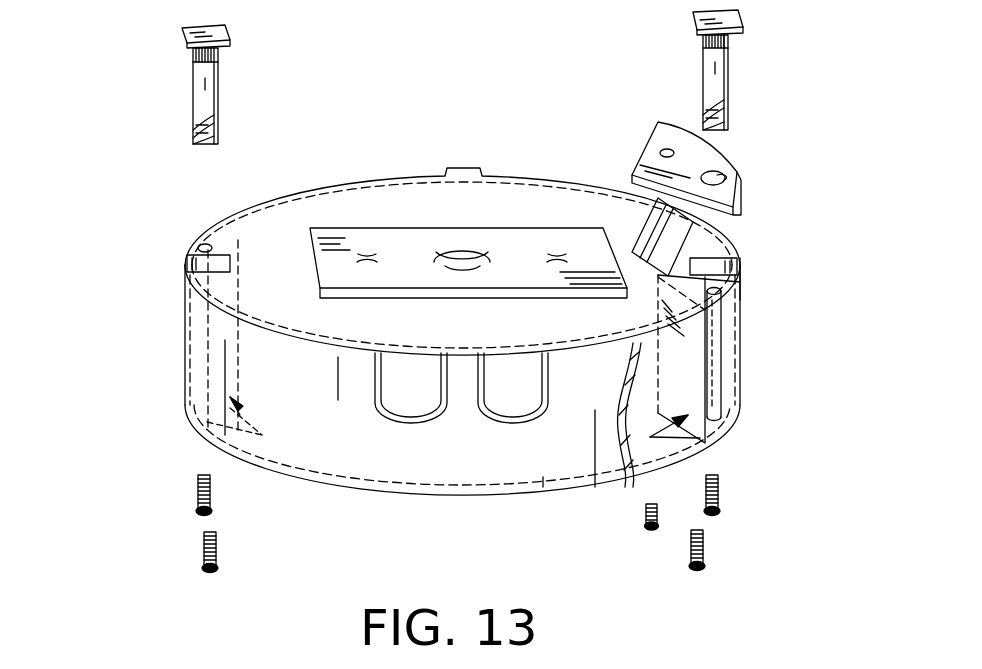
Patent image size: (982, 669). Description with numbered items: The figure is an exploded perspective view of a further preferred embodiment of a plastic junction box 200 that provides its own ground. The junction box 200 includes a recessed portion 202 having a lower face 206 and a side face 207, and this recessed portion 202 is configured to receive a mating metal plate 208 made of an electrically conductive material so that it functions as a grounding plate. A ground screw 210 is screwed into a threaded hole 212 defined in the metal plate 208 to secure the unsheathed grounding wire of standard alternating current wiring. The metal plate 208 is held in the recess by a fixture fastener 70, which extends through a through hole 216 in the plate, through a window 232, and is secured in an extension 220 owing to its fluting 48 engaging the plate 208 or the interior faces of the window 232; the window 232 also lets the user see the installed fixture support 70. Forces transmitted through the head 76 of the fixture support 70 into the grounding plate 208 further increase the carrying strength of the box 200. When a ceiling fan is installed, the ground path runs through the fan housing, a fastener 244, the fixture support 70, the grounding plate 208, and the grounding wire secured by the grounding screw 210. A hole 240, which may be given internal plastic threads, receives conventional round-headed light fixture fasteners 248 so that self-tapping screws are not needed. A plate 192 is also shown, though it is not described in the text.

The fluting 48 is at (703, 43).
The fixture fastener 70 is at (490, 72).
The head 76 is at (212, 32).
The mounting plate 192 is at (400, 242).
The junction box 200 is at (436, 331).
The recessed portion 202 is at (748, 261).
The lower face 206 is at (722, 250).
The side face 207 is at (650, 214).
The metal plate 208 is at (672, 163).
The ground screw 210 is at (645, 518).
The threaded hole 212 is at (658, 153).
The through hole 216 is at (745, 178).
The extension 220 is at (207, 422).
The window 232 is at (176, 262).
The hole 240 is at (205, 245).
The fastener 244 is at (196, 495).
The light fixture fasteners 248 is at (203, 545).